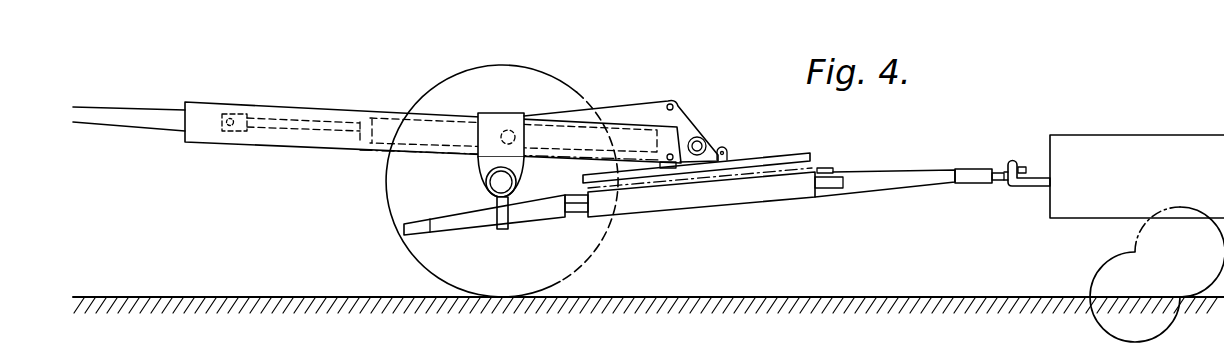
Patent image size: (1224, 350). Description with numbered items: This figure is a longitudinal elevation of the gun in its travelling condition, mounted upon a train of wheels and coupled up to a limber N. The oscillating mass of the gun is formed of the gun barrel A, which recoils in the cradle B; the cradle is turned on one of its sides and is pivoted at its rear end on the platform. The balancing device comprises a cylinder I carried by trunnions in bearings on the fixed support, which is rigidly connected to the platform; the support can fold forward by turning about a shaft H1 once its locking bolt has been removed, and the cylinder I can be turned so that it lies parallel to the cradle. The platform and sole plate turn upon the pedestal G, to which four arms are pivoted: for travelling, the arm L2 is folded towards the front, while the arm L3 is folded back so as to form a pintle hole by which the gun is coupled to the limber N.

The gun barrel A is at (152, 118).
The cradle B is at (307, 139).
The cylinder I is at (404, 122).
The shaft H1 is at (673, 157).
The pedestal G is at (759, 194).
The arm L2 is at (565, 219).
The arm L3 is at (917, 180).
The limber N is at (1092, 145).